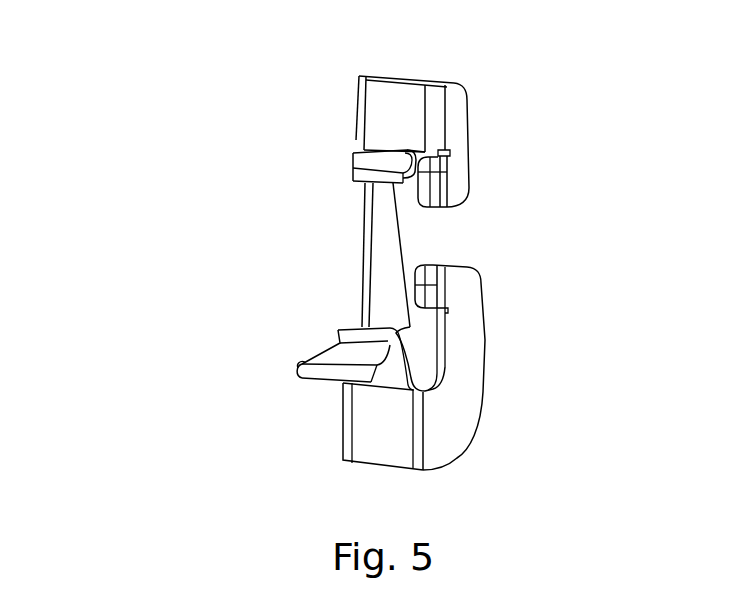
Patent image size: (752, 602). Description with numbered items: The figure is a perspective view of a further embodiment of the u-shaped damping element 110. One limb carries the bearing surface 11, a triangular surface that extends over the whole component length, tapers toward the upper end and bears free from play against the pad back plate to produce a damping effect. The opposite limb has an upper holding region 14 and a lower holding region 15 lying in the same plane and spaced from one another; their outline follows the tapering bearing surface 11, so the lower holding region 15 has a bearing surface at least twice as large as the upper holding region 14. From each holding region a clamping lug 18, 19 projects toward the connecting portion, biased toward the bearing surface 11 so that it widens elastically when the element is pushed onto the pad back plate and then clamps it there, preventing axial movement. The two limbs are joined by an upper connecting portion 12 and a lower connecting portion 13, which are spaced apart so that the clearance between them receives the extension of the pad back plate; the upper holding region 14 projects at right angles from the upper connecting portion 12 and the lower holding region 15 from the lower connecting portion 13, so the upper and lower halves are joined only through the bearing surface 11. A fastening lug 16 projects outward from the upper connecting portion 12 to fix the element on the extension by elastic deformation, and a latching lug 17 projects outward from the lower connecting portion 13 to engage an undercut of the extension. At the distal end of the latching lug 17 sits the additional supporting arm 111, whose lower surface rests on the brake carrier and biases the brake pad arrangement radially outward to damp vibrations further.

The damping element 110 is at (308, 180).
The bearing surface 11 is at (380, 248).
The upper connecting portion 12 is at (388, 117).
The lower connecting portion 13 is at (380, 428).
The upper holding region 14 is at (452, 135).
The lower holding region 15 is at (450, 387).
The fastening lug 16 is at (383, 170).
The latching lug 17 is at (362, 328).
The clamping lug 18 is at (427, 193).
The clamping lug 19 is at (432, 283).
The supporting arm 111 is at (300, 372).